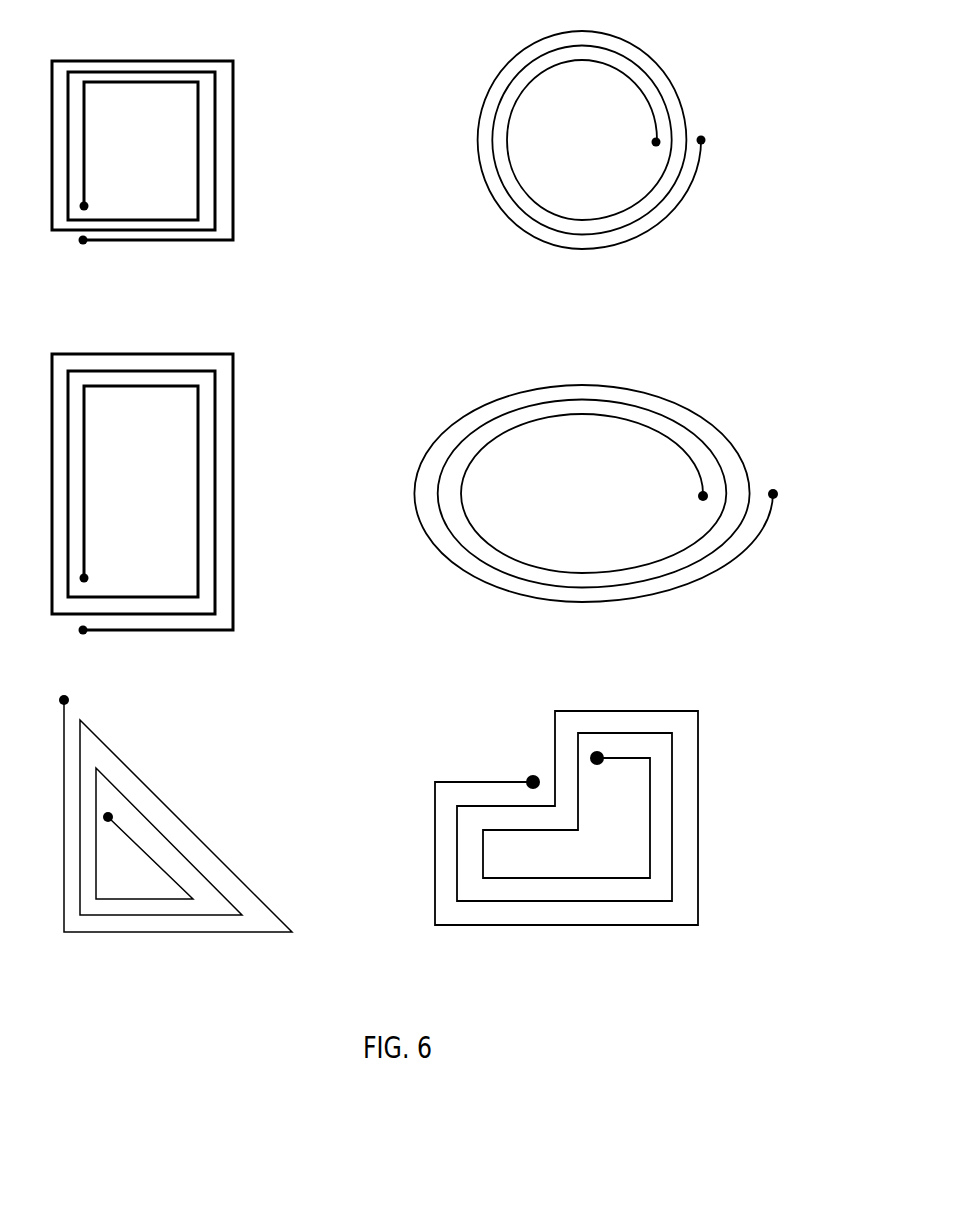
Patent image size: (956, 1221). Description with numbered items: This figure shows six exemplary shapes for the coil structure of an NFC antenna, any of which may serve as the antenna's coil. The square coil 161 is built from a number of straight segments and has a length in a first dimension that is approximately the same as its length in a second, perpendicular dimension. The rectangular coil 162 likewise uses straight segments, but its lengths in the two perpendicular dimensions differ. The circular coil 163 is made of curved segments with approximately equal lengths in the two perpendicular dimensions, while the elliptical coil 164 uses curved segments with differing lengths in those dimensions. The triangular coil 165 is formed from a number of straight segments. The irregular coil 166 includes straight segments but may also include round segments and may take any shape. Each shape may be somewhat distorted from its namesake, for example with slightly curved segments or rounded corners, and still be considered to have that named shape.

The square coil 161 is at (233, 67).
The rectangular coil 162 is at (233, 366).
The circular coil 163 is at (667, 68).
The elliptical coil 164 is at (720, 425).
The triangular coil 165 is at (122, 760).
The irregular coil 166 is at (698, 728).